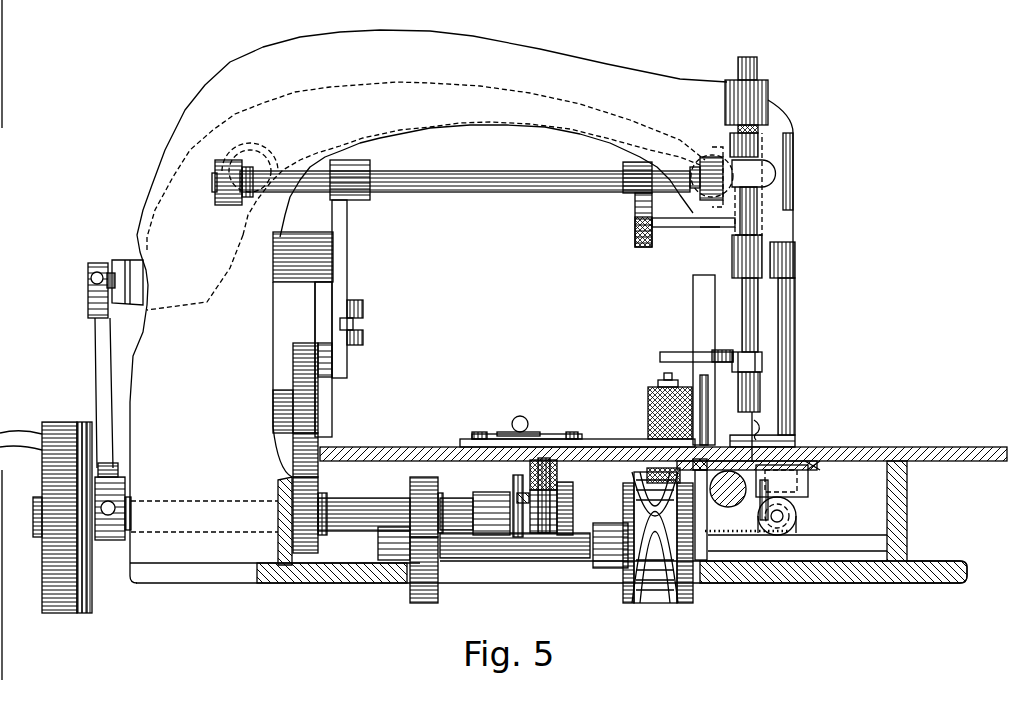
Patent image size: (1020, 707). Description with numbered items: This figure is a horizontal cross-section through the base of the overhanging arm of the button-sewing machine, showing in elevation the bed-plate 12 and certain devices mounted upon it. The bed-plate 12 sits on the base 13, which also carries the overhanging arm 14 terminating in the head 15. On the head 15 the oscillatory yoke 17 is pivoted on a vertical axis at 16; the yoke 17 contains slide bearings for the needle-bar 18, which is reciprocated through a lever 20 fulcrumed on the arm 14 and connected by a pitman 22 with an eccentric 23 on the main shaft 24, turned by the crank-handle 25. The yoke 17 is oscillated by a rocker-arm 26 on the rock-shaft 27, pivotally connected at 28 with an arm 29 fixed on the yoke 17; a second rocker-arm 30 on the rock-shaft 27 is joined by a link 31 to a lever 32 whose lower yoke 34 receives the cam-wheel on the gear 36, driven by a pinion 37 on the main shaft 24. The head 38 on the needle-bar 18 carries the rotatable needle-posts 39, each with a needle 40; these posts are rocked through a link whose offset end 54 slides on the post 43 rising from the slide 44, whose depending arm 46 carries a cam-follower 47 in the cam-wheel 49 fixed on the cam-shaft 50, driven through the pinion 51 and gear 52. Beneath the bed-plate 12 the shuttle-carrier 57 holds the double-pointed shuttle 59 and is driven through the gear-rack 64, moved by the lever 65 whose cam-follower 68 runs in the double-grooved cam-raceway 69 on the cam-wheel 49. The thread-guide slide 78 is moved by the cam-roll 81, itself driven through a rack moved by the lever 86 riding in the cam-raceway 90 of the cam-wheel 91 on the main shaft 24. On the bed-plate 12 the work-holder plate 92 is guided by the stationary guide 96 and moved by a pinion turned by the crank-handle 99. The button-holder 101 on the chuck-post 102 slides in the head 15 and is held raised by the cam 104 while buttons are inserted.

The bed-plate 12 is at (924, 447).
The base 13 is at (278, 543).
The overhanging arm 14 is at (238, 332).
The head 15 is at (683, 76).
The vertical axis 16 is at (762, 128).
The oscillatory yoke 17 is at (796, 152).
The needle-bar 18 is at (752, 66).
The lever 20 is at (141, 300).
The pitman 22 is at (99, 380).
The eccentric 23 is at (125, 553).
The main shaft 24 is at (35, 505).
The crank-handle 25 is at (12, 432).
The rocker-arm 26 is at (628, 209).
The rock-shaft 27 is at (568, 186).
The pivotal connection 28 is at (634, 246).
The arm 29 is at (697, 232).
The rocker-arm 30 is at (348, 258).
The link 31 is at (364, 323).
The lever 32 is at (315, 295).
The yoke 34 is at (329, 398).
The gear 36 is at (325, 417).
The pinion 37 is at (306, 546).
The head 38 is at (764, 367).
The needle-posts 39 is at (760, 351).
The needle 40 is at (755, 418).
The post 43 is at (696, 286).
The slide 44 is at (698, 462).
The depending arm 46 is at (729, 508).
The cam-follower 47 is at (700, 515).
The cam-wheel 49 is at (625, 508).
The cam-shaft 50 is at (465, 558).
The pinion 51 is at (432, 487).
The gear 52 is at (410, 592).
The offset 54 is at (660, 356).
The shuttle-carrier 57 is at (792, 497).
The double-pointed shuttle 59 is at (812, 470).
The gear-rack 64 is at (800, 527).
The lever 65 is at (648, 471).
The cam-follower 68 is at (648, 492).
The double-grooved cam-raceway 69 is at (643, 606).
The slide 78 is at (792, 490).
The cam-roll 81 is at (757, 525).
The lever 86 is at (545, 456).
The double-grooved cam-raceway 90 is at (565, 532).
The cam-wheel 91 is at (512, 479).
The plate 92 is at (590, 439).
The stationary guide 96 is at (478, 432).
The crank-handle 99 is at (500, 432).
The chuck-head 101 is at (770, 433).
The chuck-post 102 is at (797, 292).
The cam 104 is at (797, 252).